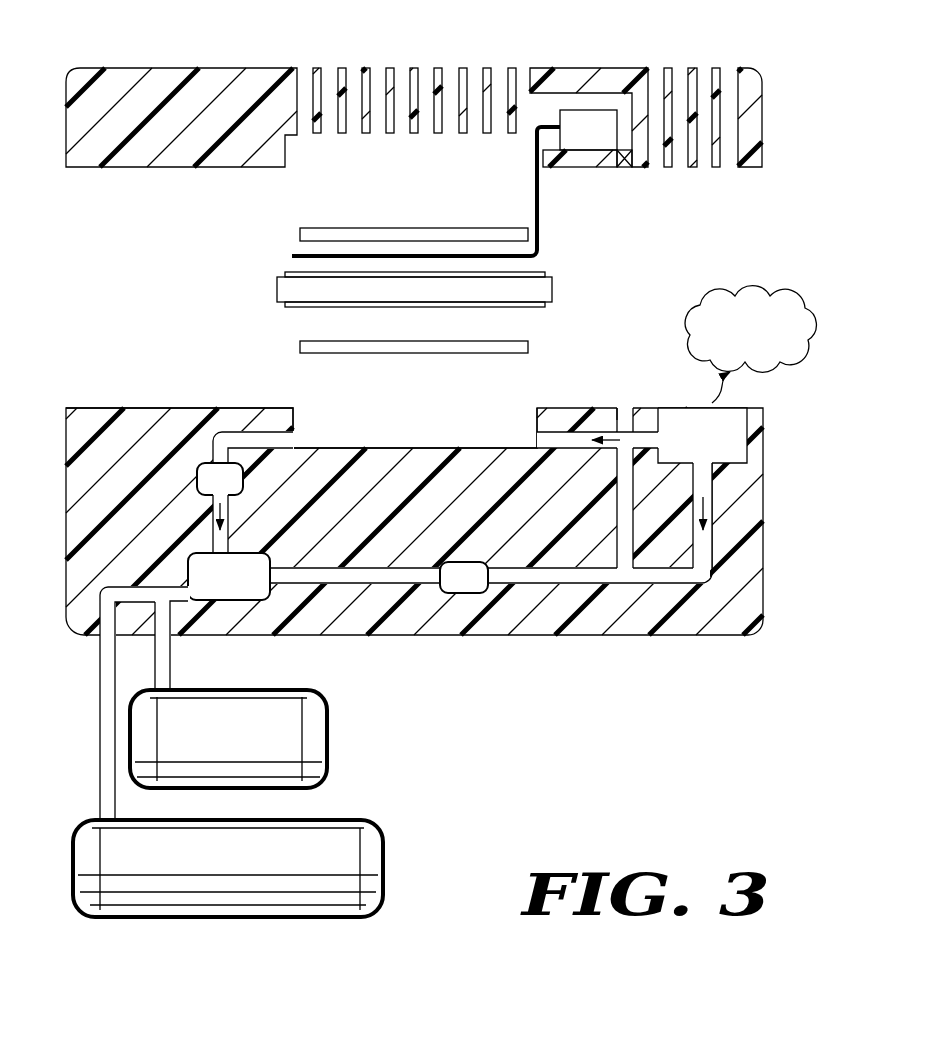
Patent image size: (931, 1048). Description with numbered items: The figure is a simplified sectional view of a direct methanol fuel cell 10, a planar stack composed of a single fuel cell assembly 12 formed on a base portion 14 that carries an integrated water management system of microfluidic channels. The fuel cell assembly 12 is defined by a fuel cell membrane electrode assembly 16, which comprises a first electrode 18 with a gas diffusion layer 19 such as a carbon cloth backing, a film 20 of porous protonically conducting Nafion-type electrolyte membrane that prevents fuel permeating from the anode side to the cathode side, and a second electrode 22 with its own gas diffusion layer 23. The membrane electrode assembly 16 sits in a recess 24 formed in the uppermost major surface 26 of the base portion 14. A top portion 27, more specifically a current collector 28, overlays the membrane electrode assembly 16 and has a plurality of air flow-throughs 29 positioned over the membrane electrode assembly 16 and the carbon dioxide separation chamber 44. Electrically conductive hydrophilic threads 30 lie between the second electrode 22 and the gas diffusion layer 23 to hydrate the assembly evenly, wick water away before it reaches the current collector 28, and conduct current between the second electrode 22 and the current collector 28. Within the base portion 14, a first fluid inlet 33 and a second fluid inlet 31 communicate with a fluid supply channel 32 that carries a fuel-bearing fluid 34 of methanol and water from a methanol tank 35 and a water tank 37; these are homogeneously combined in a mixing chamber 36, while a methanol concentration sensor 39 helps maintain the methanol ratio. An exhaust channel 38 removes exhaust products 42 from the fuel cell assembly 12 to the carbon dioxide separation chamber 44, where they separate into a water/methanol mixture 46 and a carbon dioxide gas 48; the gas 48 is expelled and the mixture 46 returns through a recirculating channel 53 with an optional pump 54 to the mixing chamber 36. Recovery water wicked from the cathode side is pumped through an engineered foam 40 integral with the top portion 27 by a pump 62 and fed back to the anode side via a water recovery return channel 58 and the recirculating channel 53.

The direct methanol fuel cell 10 is at (437, 586).
The fuel cell assembly 12 is at (500, 290).
The base portion 14 is at (91, 377).
The fuel cell membrane electrode assembly 16 is at (432, 287).
The first electrode 18 is at (547, 308).
The gas diffusion layer 19 is at (410, 354).
The film 20 is at (553, 290).
The second electrode 22 is at (547, 272).
The gas diffusion layer 23 is at (404, 228).
The recess 24 is at (334, 425).
The uppermost major surface 26 is at (194, 407).
The top portion 27 is at (90, 197).
The current collector 28 is at (764, 120).
The air flow-throughs 29 is at (462, 67).
The electrically conductive hydrophilic threads 30 is at (292, 256).
The second fluid inlet 31 is at (172, 661).
The fluid supply channel 32 is at (232, 540).
The first fluid inlet 33 is at (99, 677).
The fuel-bearing fluid 34 is at (212, 513).
The methanol tank 35 is at (385, 864).
The mixing chamber 36 is at (237, 592).
The water tank 37 is at (329, 733).
The exhaust channel 38 is at (537, 431).
The methanol concentration sensor 39 is at (196, 478).
The engineered foam 40 is at (590, 138).
The exhaust products 42 is at (599, 431).
The carbon dioxide separation chamber 44 is at (738, 448).
The water/methanol mixture 46 is at (705, 503).
The carbon dioxide gas 48 is at (775, 294).
The recirculating channel 53 is at (527, 585).
The pump 54 is at (448, 594).
The water recovery return channel 58 is at (625, 418).
The pump 62 is at (623, 168).